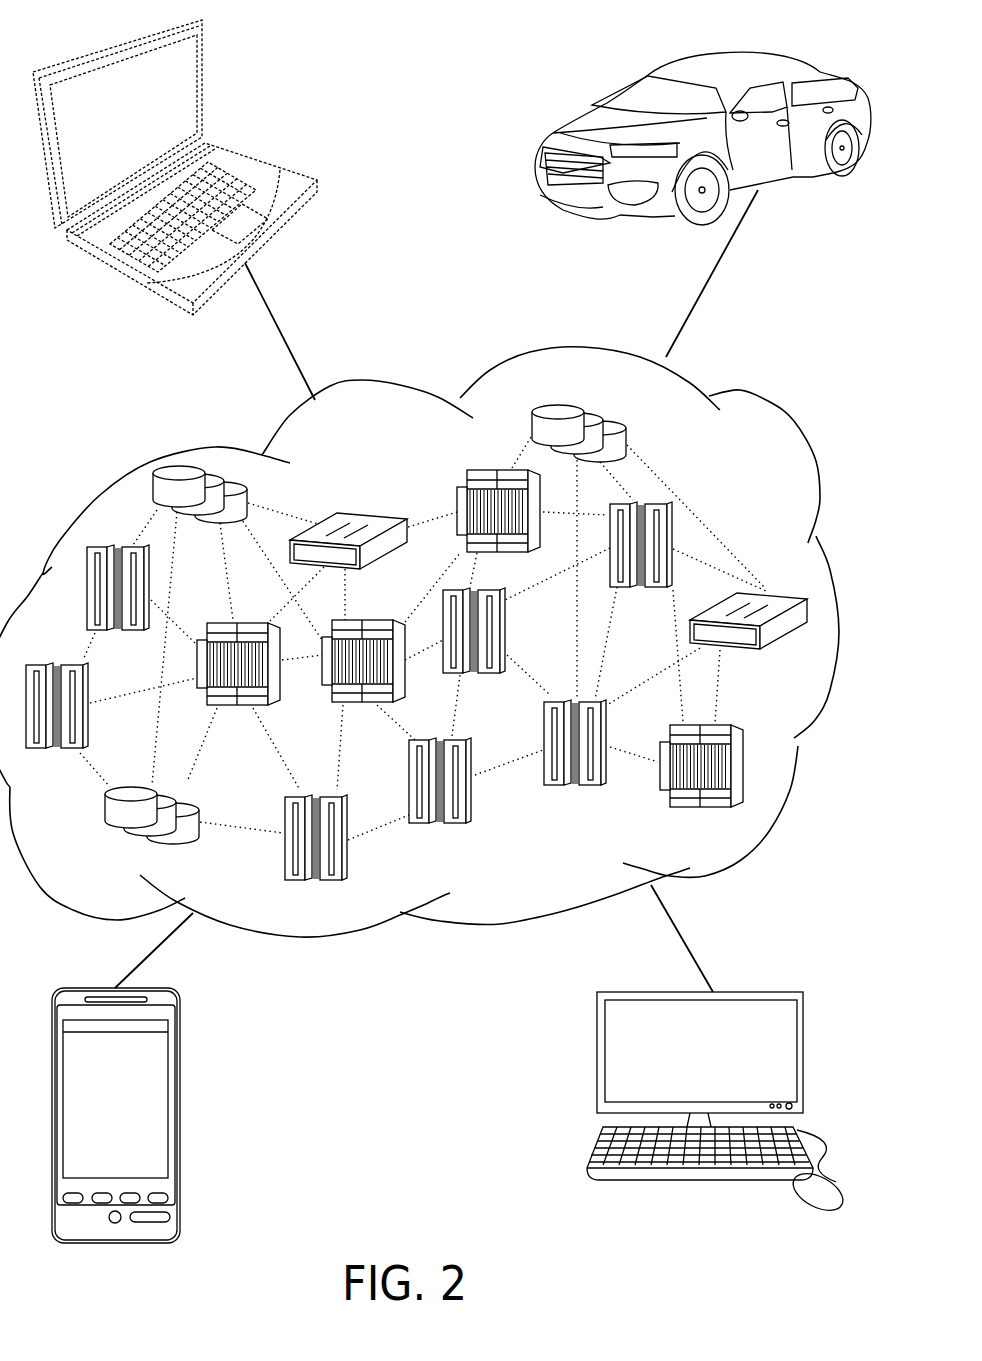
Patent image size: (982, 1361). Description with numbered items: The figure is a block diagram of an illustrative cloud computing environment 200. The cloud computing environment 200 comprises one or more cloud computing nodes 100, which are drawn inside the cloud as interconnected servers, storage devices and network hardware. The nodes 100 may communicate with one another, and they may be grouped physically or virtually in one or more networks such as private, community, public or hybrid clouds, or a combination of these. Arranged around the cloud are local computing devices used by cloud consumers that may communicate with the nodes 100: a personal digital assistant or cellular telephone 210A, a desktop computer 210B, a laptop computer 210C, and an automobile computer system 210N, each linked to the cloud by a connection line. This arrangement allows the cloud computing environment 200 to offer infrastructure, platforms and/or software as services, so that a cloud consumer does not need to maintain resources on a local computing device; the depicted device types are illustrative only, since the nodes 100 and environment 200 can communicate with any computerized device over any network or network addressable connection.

The cloud computing node 100 is at (777, 568).
The cloud computing environment 200 is at (784, 421).
The personal digital assistant (PDA) or cellular telephone 210A is at (175, 1015).
The desktop computer 210B is at (803, 1013).
The laptop computer 210C is at (313, 140).
The automobile computer system 210N is at (820, 72).